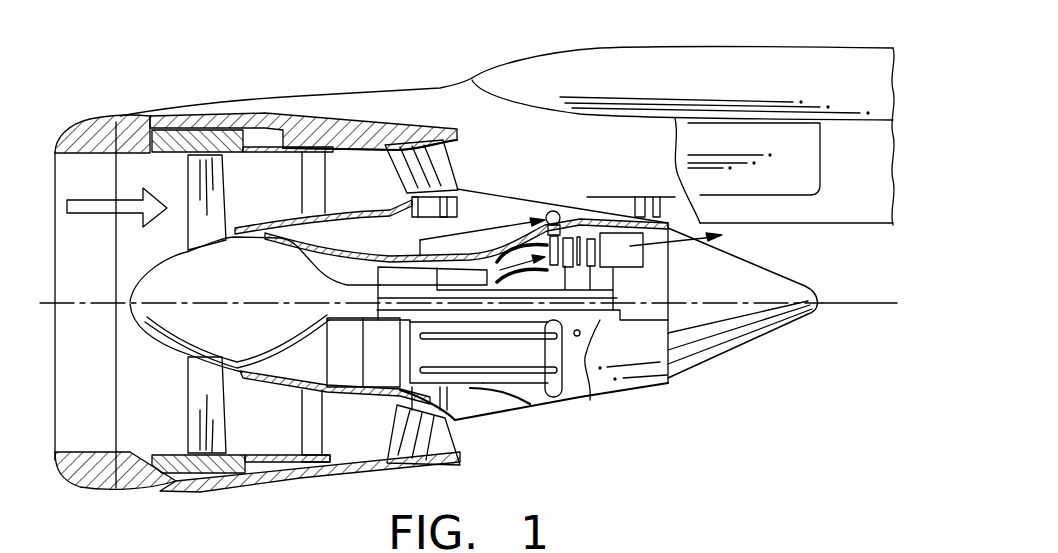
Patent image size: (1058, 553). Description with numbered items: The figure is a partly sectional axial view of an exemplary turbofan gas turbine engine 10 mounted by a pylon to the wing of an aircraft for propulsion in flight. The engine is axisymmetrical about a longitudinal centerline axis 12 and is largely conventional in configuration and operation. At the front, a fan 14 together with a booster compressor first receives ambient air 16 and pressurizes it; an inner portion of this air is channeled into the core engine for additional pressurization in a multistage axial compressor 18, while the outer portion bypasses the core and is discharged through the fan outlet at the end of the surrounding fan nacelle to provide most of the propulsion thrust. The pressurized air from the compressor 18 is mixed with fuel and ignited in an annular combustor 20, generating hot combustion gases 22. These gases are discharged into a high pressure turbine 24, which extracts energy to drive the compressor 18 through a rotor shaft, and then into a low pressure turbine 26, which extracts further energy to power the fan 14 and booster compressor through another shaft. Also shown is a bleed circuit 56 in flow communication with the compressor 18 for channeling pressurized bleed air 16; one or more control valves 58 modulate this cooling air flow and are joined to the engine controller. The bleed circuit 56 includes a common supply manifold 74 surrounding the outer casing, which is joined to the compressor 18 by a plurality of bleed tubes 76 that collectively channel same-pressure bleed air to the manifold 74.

The turbofan gas turbine engine 10 is at (257, 84).
The longitudinal centerline axis 12 is at (875, 304).
The fan 14 is at (187, 378).
The ambient air 16 is at (100, 214).
The multistage axial compressor 18 is at (453, 264).
The annular combustor 20 is at (512, 250).
The hot combustion gases 22 is at (675, 246).
The high pressure turbine 24 is at (584, 200).
The low pressure turbine 26 is at (621, 247).
The bleed circuit 56 is at (531, 394).
The control valves 58 is at (581, 334).
The common supply manifold 74 is at (572, 392).
The bleed tubes 76 is at (472, 382).